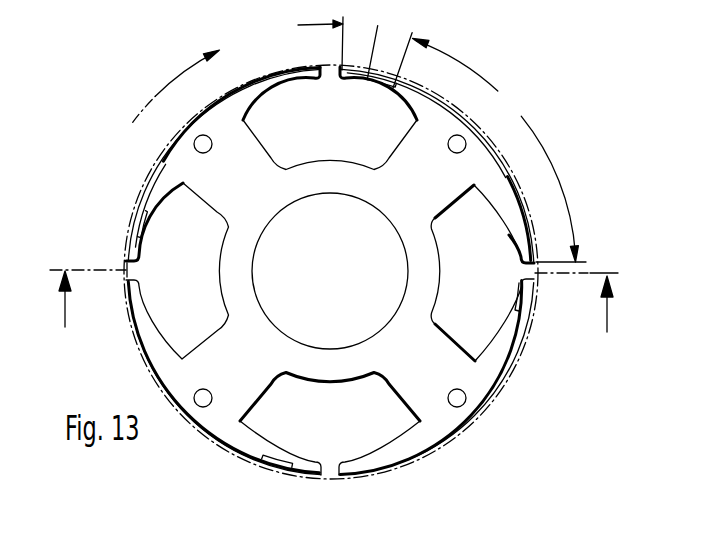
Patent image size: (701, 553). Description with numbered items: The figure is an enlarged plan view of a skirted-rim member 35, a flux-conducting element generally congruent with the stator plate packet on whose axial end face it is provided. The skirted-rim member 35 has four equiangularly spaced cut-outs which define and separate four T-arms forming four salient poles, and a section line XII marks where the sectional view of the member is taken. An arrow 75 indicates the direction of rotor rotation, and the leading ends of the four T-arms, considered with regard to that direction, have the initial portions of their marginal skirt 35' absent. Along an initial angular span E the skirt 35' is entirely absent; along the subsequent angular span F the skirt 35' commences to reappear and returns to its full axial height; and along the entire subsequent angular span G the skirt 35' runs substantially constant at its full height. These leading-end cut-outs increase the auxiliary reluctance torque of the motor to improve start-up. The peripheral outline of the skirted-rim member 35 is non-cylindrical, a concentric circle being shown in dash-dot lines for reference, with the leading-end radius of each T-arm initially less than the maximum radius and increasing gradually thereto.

The skirted-rim member 35 is at (320, 271).
The marginal skirt 35' is at (329, 284).
The arrow indicating direction of rotor rotation 75 is at (158, 91).
The section line XII— XII is at (334, 286).
The initial angular span E is at (338, 47).
The subsequent angular span F is at (400, 55).
The subsequent angular span G is at (500, 151).